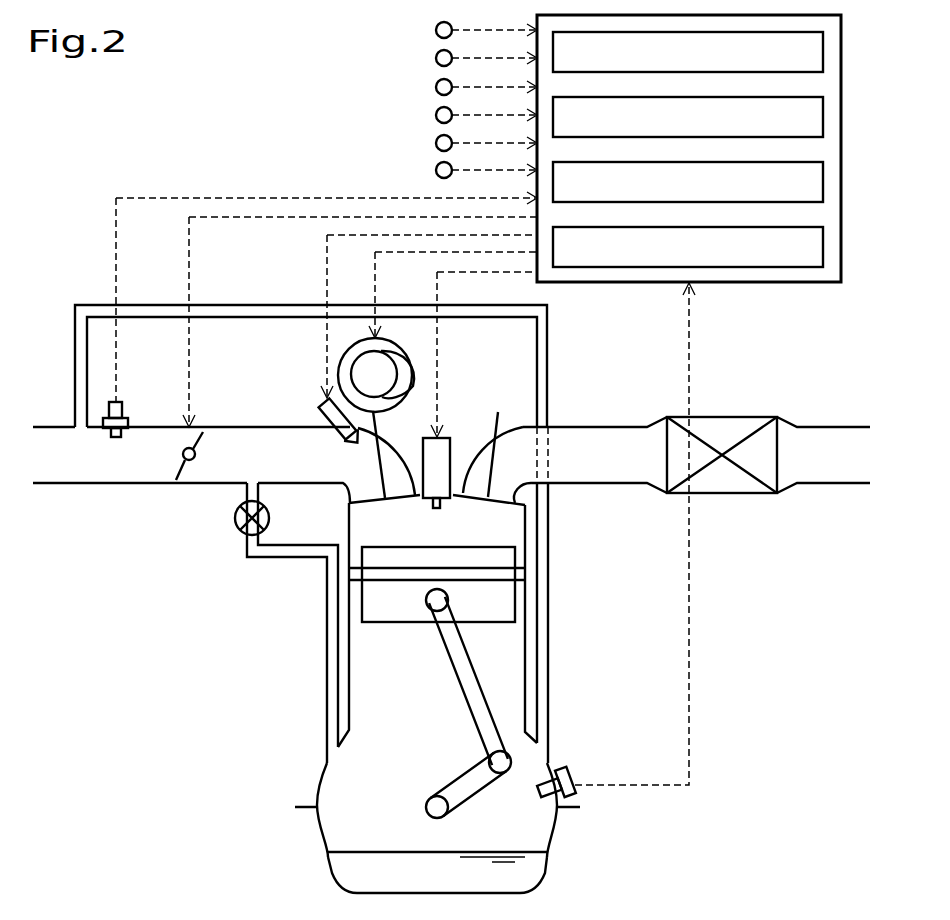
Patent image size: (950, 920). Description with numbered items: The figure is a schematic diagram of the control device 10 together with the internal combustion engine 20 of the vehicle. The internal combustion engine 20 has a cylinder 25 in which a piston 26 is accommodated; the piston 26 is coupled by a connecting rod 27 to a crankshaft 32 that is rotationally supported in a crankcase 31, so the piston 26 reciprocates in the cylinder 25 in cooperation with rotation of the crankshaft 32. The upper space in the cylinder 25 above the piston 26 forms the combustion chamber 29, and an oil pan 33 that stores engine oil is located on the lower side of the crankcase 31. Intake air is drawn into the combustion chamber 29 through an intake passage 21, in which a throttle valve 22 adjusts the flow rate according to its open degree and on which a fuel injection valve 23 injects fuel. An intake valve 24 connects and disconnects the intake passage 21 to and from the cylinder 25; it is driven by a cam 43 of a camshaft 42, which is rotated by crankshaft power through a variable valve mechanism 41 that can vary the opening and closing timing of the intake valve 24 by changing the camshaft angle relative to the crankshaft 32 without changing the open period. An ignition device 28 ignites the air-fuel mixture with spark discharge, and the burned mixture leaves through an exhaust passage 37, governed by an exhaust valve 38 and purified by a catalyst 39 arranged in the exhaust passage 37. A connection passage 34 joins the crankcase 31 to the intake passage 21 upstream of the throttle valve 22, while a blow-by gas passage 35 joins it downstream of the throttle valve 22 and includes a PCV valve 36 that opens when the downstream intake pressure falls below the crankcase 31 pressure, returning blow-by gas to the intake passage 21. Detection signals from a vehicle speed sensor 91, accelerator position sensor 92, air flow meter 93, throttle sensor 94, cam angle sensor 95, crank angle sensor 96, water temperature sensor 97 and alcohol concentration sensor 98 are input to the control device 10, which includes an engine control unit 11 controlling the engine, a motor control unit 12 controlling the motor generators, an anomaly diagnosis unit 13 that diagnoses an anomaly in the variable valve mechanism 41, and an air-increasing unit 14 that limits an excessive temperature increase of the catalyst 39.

The control device 10 is at (712, 178).
The engine control unit 11 is at (823, 52).
The motor control unit 12 is at (823, 117).
The anomaly diagnosis unit 13 is at (823, 182).
The air-increasing unit 14 is at (823, 247).
The internal combustion engine 20 is at (185, 697).
The intake passage 21 is at (85, 485).
The throttle valve 22 is at (186, 485).
The fuel injection valve 23 is at (322, 410).
The intake valve 24 is at (380, 468).
The cylinder 25 is at (350, 700).
The piston 26 is at (415, 624).
The connecting rod 27 is at (477, 686).
The ignition device 28 is at (451, 437).
The combustion chamber 29 is at (455, 542).
The crankcase 31 is at (322, 770).
The crankshaft 32 is at (426, 808).
The oil pan 33 is at (325, 835).
The connection passage 34 is at (548, 615).
The blow-by gas passage 35 is at (325, 622).
The PCV valve 36 is at (270, 518).
The exhaust passage 37 is at (838, 485).
The exhaust valve 38 is at (500, 412).
The catalyst 39 is at (745, 415).
The variable valve mechanism 41 is at (345, 345).
The camshaft 42 is at (381, 365).
The cam 43 is at (400, 378).
The vehicle speed sensor 91 is at (436, 30).
The accelerator position sensor 92 is at (436, 58).
The air flow meter 93 is at (122, 410).
The throttle sensor 94 is at (436, 87).
The cam angle sensor 95 is at (436, 115).
The crank angle sensor 96 is at (573, 772).
The water temperature sensor 97 is at (436, 143).
The alcohol concentration sensor 98 is at (436, 170).